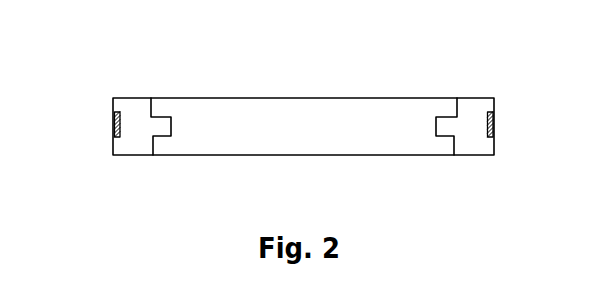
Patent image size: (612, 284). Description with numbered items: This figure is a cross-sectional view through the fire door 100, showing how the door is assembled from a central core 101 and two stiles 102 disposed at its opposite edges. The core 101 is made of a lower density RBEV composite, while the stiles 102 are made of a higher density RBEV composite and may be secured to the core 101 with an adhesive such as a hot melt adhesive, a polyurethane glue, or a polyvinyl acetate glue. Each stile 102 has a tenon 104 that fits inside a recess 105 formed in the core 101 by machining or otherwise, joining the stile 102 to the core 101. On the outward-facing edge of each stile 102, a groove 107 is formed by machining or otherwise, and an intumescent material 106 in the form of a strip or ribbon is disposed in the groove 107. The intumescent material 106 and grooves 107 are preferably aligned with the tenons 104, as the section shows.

The fire door 100 is at (310, 136).
The core 101 is at (272, 107).
The stile 102 is at (132, 103).
The tenon 104 is at (160, 128).
The recess 105 is at (176, 128).
The intumescent material 106 is at (115, 128).
The groove 107 is at (128, 134).